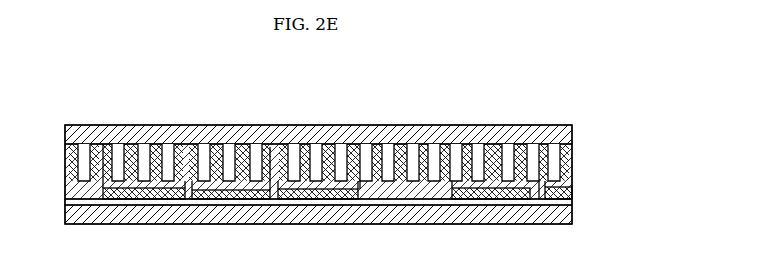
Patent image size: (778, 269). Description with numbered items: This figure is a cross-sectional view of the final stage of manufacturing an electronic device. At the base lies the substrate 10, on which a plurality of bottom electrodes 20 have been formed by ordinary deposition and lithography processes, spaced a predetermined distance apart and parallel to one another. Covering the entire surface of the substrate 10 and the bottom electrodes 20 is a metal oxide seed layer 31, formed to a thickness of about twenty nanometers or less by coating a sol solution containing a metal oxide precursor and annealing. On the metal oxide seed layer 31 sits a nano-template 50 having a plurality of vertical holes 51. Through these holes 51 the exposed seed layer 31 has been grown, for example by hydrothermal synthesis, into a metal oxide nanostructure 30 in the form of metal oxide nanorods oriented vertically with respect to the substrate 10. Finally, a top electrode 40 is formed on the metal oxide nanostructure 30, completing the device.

The substrate 10 is at (574, 214).
The bottom electrodes 20 is at (571, 198).
The metal oxide nanostructure 30 is at (500, 150).
The metal oxide seed layer 31 is at (574, 203).
The top electrode 40 is at (574, 136).
The nano-template 50 is at (574, 164).
The vertical holes 51 is at (546, 152).